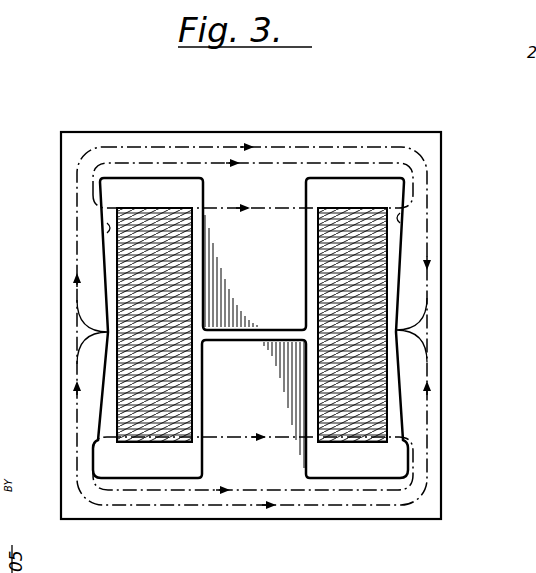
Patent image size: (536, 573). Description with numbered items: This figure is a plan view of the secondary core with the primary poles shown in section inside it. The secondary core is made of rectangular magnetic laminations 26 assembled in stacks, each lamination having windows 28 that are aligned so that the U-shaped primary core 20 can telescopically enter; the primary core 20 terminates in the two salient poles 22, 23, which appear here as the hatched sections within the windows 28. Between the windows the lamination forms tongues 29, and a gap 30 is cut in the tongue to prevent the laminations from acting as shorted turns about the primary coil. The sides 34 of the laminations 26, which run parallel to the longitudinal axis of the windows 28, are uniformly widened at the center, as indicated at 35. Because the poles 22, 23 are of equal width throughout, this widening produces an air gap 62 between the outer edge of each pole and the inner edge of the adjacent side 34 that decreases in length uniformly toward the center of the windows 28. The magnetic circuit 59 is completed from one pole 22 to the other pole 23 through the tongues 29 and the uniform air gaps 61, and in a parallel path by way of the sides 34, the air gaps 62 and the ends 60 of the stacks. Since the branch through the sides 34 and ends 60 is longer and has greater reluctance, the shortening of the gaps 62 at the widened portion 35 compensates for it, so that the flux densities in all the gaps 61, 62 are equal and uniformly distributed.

The primary core 20 is at (392, 443).
The salient pole 22 is at (120, 385).
The salient pole 23 is at (382, 385).
The magnetic lamination 26 is at (446, 145).
The window 28 is at (107, 229).
The lamination tongue 29 is at (254, 349).
The gap in the tongue 30 is at (280, 338).
The side 34 is at (69, 297).
The widened center portion 35 is at (78, 337).
The magnetic circuit 59 is at (242, 147).
The end 60 is at (313, 140).
The air gap 61 is at (306, 237).
The air gap 62 is at (398, 240).